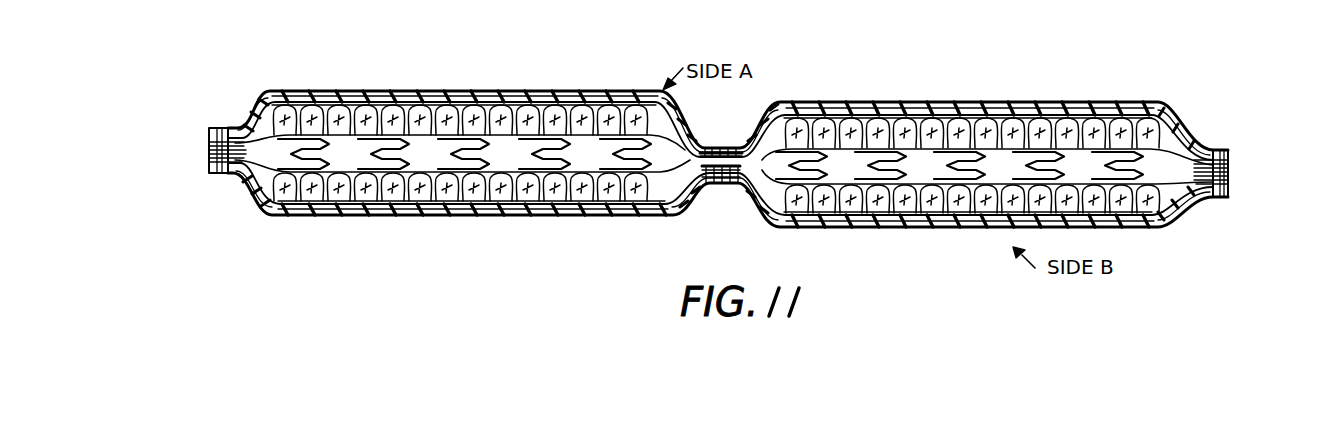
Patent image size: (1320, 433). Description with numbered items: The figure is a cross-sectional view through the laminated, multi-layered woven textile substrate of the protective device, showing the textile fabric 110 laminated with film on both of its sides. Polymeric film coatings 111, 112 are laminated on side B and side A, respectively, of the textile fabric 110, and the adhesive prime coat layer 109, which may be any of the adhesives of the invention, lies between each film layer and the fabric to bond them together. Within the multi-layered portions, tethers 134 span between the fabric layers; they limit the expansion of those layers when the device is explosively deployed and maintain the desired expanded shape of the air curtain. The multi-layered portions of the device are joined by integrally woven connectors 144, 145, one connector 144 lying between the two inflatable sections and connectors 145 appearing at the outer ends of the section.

The adhesive prime coat layer 109 is at (427, 104).
The textile fabric 110 is at (1060, 105).
The polymeric film coating 111 is at (600, 216).
The polymeric film coating 112 is at (587, 102).
The tether 134 is at (388, 140).
The integrally woven connector 144 is at (712, 186).
The integrally woven connector 145 is at (222, 176).